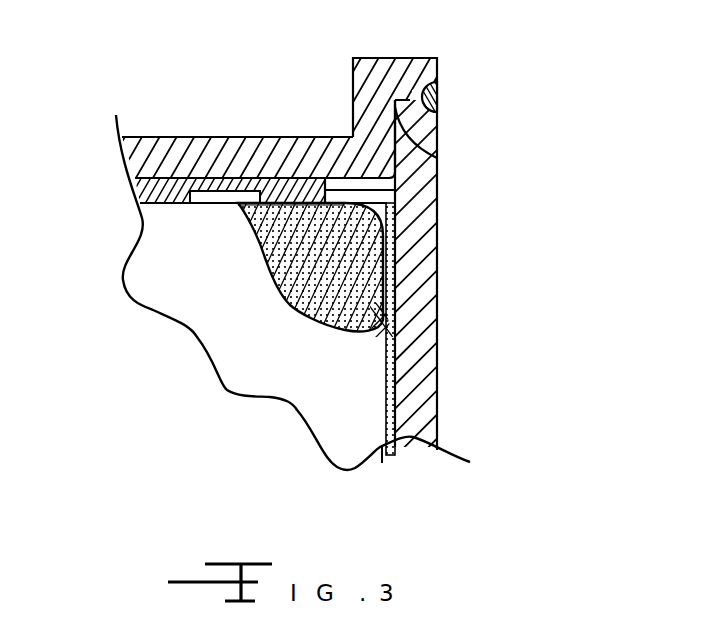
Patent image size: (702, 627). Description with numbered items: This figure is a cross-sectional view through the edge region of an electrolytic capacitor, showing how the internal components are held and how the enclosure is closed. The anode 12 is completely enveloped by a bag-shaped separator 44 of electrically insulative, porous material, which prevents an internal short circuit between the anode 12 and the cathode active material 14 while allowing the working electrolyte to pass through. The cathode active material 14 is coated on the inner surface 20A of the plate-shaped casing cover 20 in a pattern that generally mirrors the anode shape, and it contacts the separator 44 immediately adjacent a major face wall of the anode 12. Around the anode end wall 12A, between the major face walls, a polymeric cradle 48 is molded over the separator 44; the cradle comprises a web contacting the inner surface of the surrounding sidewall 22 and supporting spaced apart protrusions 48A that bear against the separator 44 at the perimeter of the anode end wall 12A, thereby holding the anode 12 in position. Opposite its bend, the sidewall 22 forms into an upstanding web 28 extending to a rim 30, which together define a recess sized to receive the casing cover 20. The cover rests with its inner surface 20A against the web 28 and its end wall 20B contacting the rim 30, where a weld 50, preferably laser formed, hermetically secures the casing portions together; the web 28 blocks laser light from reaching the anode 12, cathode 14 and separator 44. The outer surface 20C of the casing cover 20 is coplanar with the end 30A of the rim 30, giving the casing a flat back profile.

The anode 12 is at (258, 240).
The anode end wall 12A is at (289, 203).
The cathode active material 14 is at (390, 275).
The casing cover 20 is at (413, 415).
The inner surface of casing cover 20A is at (398, 342).
The end wall of casing cover 20B is at (437, 158).
The outer surface of casing cover 20C is at (440, 242).
The sidewall 22 is at (183, 148).
The web 28 is at (360, 93).
The rim 30 is at (388, 58).
The end of rim 30A is at (440, 70).
The separator 44 is at (182, 300).
The polymeric cradle 48 is at (228, 190).
The protrusions 48A is at (398, 191).
The weld 50 is at (440, 96).